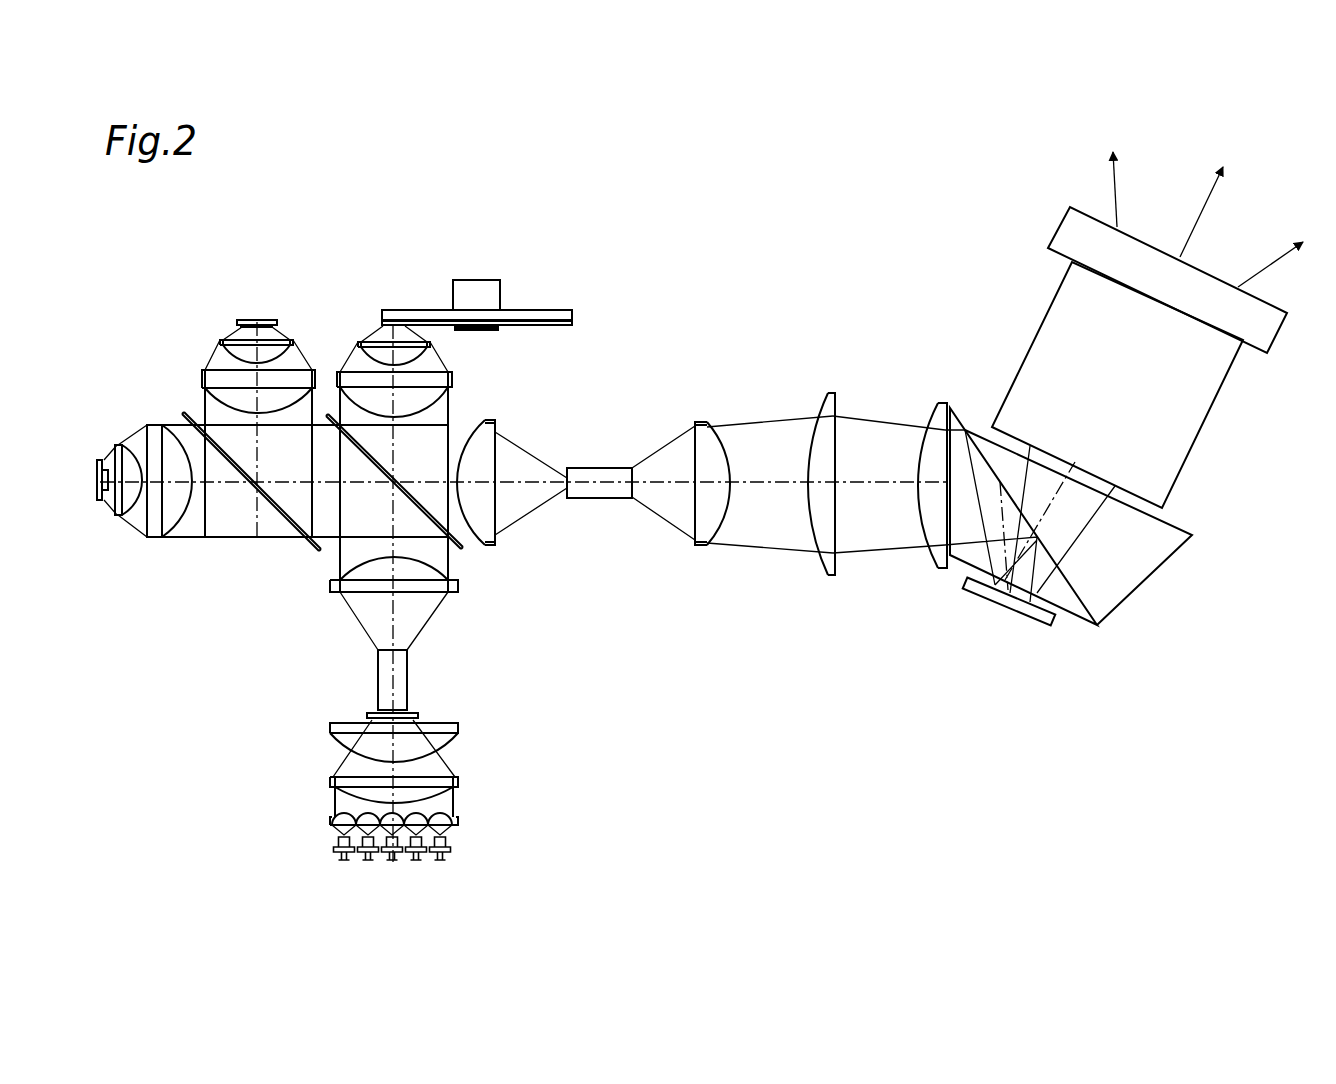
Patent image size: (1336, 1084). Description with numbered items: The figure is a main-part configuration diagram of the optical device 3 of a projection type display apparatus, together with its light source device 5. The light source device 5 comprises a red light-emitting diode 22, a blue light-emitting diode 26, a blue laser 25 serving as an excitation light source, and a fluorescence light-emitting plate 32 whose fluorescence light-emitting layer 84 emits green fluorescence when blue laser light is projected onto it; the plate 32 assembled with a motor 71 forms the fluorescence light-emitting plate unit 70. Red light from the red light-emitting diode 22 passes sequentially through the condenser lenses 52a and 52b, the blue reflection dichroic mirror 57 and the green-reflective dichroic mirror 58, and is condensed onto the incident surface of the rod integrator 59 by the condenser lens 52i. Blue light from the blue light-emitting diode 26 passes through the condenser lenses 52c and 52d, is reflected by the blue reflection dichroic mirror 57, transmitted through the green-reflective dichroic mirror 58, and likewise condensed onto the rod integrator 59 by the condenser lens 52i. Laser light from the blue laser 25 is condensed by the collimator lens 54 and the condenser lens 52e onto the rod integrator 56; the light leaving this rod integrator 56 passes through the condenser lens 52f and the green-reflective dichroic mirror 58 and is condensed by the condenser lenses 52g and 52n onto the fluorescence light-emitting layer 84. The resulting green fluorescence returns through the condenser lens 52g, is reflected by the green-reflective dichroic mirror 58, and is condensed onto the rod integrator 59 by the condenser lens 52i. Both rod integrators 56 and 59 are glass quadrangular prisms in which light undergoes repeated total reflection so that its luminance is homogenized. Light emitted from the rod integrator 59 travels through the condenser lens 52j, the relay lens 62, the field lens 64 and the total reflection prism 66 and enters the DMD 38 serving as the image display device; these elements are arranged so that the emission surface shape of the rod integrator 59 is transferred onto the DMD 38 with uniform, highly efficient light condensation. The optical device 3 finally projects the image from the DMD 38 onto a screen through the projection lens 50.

The optical device 3 is at (1082, 601).
The light source device 5 is at (400, 792).
The red light-emitting diode 22 is at (98, 500).
The blue laser 25 is at (333, 845).
The blue light-emitting diode 26 is at (273, 322).
The fluorescence light-emitting plate 32 is at (583, 313).
The DMD 38 is at (1018, 607).
The projection lens 50 is at (1188, 422).
The condenser lens 52a is at (125, 462).
The condenser lens 52b is at (162, 443).
The condenser lens 52c is at (225, 338).
The condenser lens 52d is at (297, 382).
The condenser lens 52e is at (330, 780).
The condenser lens 52f is at (335, 592).
The condenser lens 52g is at (452, 377).
The condenser lens 52i is at (493, 537).
The condenser lens 52j is at (700, 545).
The condenser lens 52n is at (362, 340).
The collimator lens 54 is at (330, 817).
The rod integrator 56 is at (400, 672).
The blue reflection dichroic mirror 57 is at (253, 490).
The green-reflective dichroic mirror 58 is at (337, 547).
The rod integrator 59 is at (608, 492).
The relay lens 62 is at (822, 410).
The field lens 64 is at (933, 415).
The total reflection prism 66 is at (1138, 572).
The fluorescence light-emitting plate unit 70 is at (528, 271).
The motor 71 is at (508, 302).
The fluorescence light-emitting layer 84 is at (560, 327).